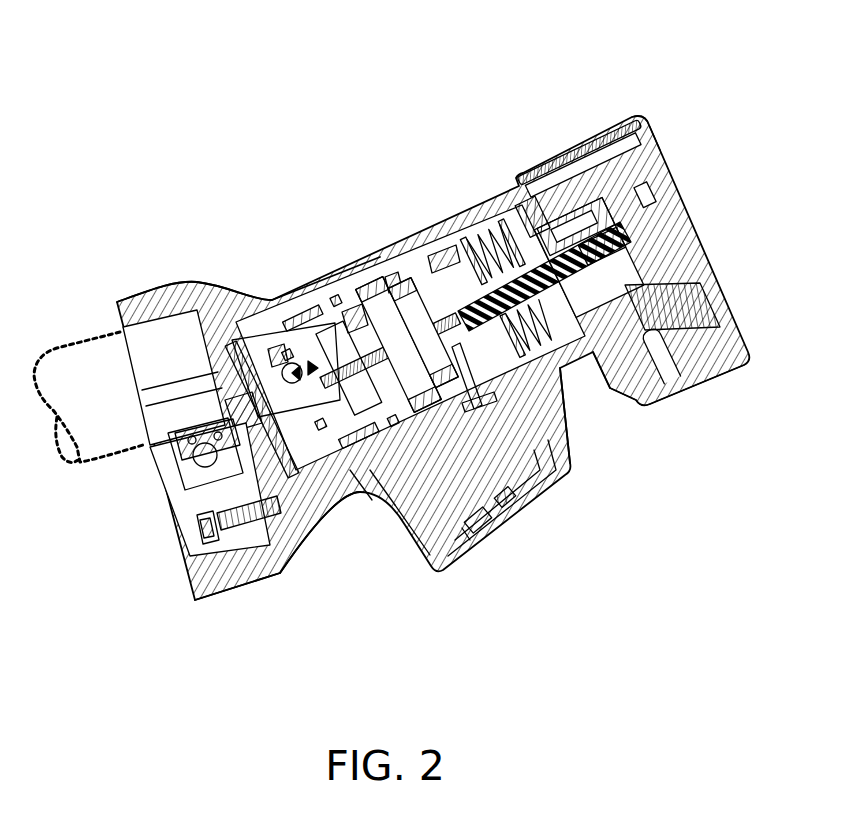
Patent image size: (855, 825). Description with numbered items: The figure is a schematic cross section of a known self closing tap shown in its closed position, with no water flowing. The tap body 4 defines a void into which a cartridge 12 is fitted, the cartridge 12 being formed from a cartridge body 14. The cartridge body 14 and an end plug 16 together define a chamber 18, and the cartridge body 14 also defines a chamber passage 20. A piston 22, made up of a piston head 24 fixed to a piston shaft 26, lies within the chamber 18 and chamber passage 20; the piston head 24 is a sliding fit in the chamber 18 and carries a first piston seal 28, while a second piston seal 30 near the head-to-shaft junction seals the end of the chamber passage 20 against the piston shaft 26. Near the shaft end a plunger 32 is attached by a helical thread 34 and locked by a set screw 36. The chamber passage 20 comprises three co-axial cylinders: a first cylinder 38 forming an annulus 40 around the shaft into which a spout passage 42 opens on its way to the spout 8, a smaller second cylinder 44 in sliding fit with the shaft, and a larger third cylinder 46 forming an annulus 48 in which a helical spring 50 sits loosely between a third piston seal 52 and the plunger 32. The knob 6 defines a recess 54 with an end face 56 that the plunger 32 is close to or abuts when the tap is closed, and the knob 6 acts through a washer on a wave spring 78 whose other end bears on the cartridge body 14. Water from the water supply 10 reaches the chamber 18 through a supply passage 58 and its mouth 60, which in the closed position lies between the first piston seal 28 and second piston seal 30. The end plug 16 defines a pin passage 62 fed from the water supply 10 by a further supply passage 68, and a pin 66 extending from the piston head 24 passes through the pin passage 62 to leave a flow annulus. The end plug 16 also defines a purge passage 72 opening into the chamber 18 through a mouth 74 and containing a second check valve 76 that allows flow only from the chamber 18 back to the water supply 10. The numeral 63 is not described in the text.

The tap body 4 is at (168, 284).
The knob 6 is at (652, 124).
The spout 8 is at (548, 494).
The water supply 10 is at (60, 350).
The cartridge 12 is at (417, 325).
The cartridge body 14 is at (423, 276).
The end plug 16 is at (280, 575).
The chamber 18 is at (322, 518).
The chamber passage 20 is at (571, 465).
The piston 22 is at (455, 300).
The piston head 24 is at (350, 472).
The piston shaft 26 is at (598, 232).
The first piston seal 28 is at (392, 505).
The second piston seal 30 is at (436, 555).
The plunger 32 is at (645, 224).
The helical thread 34 is at (631, 121).
The set screw 36 is at (652, 256).
The first cylinder 38 is at (380, 340).
The annulus 40 is at (487, 528).
The spout passage 42 is at (503, 505).
The second cylinder 44 is at (531, 218).
The third cylinder 46 is at (596, 386).
The annulus 48 is at (650, 405).
The helical spring 50 is at (686, 384).
The third piston seal 52 is at (560, 370).
The recess 54 is at (652, 190).
The end face 56 is at (702, 289).
The supply passage 58 is at (289, 355).
The mouth 60 is at (336, 300).
The pin passage 62 is at (230, 507).
The screw 63 is at (230, 572).
The pin 66 is at (325, 335).
The supply passage 68 is at (242, 302).
The purge passage 72 is at (200, 282).
The mouth 74 is at (243, 452).
The second check valve 76 is at (254, 357).
The wave spring 78 is at (558, 160).